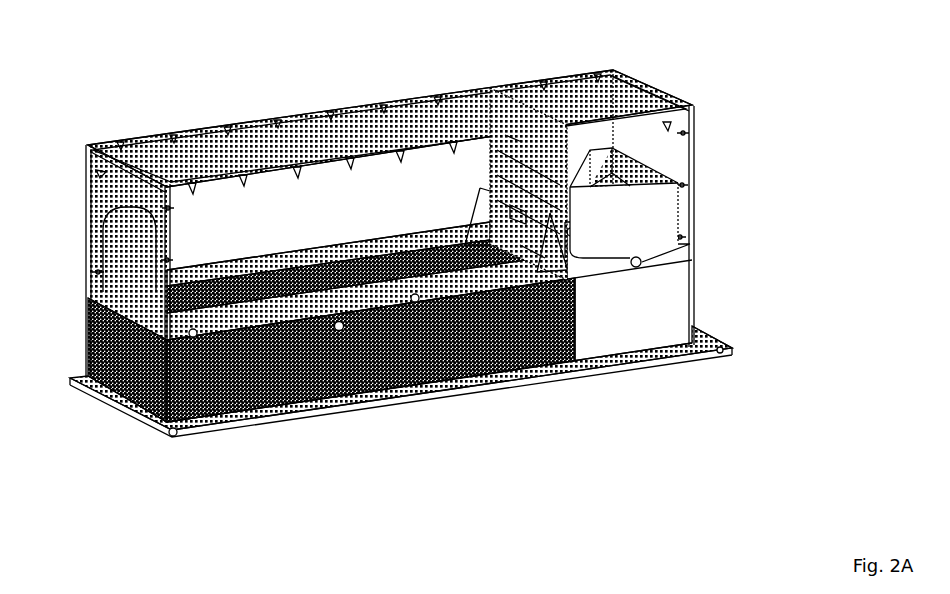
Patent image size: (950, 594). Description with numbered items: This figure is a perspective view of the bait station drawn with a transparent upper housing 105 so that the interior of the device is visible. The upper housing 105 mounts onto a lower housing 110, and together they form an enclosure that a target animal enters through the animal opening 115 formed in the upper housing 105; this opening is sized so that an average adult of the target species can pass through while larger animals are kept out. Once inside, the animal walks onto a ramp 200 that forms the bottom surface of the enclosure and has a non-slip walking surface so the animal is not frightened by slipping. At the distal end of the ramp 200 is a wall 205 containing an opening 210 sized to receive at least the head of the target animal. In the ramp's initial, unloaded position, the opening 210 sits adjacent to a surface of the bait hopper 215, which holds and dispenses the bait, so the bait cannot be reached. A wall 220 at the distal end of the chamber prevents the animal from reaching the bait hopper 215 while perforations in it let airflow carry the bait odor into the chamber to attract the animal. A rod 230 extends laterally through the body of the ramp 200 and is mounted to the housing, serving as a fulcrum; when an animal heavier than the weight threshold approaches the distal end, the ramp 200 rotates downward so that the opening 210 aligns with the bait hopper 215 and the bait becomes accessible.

The upper housing 105 is at (640, 87).
The lower housing 110 is at (440, 343).
The animal opening 115 is at (132, 233).
The ramp 200 is at (88, 322).
The wall 205 is at (497, 193).
The opening 210 is at (518, 217).
The bait hopper 215 is at (660, 212).
The wall 220 is at (517, 120).
The rod 230 is at (340, 331).